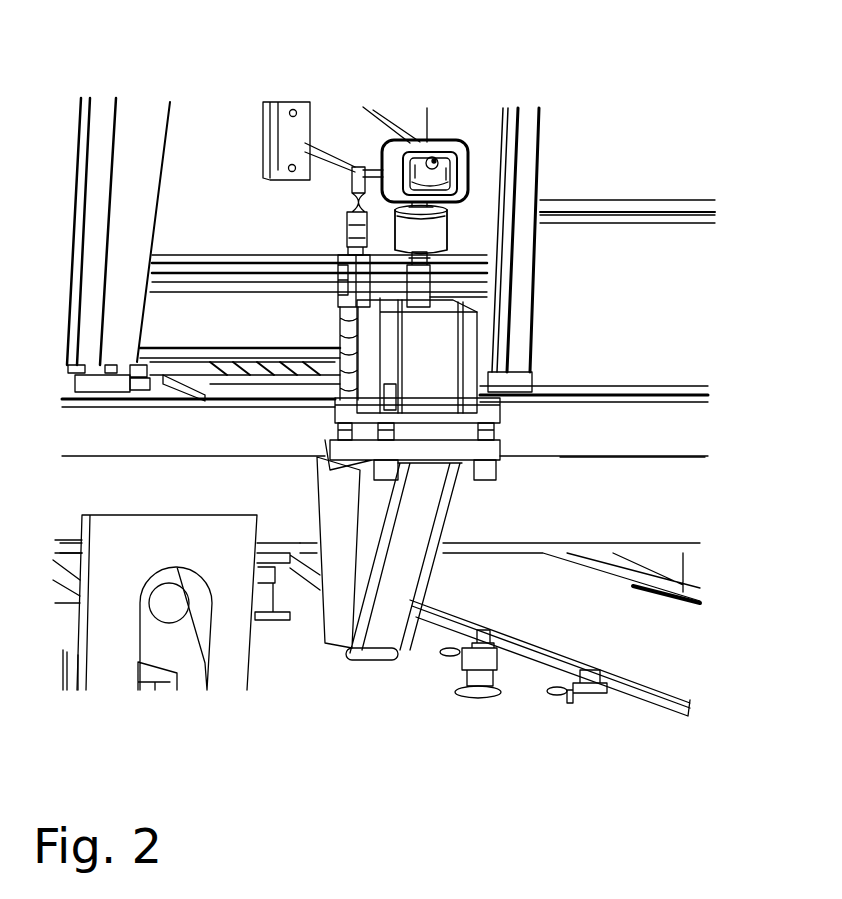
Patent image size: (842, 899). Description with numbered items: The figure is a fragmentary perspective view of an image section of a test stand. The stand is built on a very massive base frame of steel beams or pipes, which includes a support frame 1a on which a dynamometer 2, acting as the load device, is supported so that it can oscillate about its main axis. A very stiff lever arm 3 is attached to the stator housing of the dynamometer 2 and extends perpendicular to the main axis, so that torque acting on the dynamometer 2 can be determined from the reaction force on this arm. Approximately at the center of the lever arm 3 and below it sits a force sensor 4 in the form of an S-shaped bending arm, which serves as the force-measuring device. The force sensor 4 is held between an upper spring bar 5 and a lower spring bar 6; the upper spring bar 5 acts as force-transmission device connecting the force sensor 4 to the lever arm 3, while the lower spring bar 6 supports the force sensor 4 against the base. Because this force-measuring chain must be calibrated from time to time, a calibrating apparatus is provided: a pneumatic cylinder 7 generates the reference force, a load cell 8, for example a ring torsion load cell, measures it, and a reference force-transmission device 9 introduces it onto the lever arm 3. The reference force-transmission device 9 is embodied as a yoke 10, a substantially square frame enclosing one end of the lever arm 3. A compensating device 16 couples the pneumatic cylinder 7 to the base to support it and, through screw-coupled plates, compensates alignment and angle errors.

The support frame 1a is at (640, 513).
The dynamometer 2 is at (222, 133).
The lever arm 3 is at (338, 118).
The force sensor 4 is at (338, 290).
The upper spring bar 5 is at (348, 213).
The lower spring bar 6 is at (340, 340).
The pneumatic cylinder 7 is at (442, 363).
The load cell 8 is at (425, 233).
The reference force-transmission device 9 is at (458, 173).
The yoke 10 is at (433, 143).
The compensating device 16 is at (530, 431).